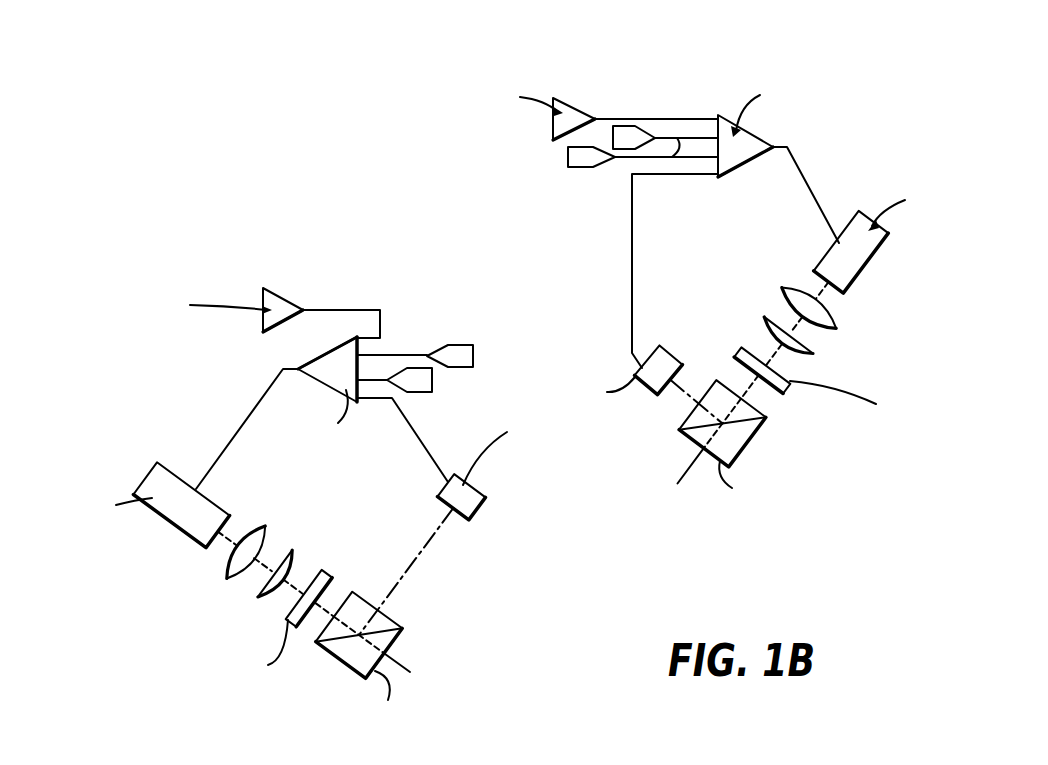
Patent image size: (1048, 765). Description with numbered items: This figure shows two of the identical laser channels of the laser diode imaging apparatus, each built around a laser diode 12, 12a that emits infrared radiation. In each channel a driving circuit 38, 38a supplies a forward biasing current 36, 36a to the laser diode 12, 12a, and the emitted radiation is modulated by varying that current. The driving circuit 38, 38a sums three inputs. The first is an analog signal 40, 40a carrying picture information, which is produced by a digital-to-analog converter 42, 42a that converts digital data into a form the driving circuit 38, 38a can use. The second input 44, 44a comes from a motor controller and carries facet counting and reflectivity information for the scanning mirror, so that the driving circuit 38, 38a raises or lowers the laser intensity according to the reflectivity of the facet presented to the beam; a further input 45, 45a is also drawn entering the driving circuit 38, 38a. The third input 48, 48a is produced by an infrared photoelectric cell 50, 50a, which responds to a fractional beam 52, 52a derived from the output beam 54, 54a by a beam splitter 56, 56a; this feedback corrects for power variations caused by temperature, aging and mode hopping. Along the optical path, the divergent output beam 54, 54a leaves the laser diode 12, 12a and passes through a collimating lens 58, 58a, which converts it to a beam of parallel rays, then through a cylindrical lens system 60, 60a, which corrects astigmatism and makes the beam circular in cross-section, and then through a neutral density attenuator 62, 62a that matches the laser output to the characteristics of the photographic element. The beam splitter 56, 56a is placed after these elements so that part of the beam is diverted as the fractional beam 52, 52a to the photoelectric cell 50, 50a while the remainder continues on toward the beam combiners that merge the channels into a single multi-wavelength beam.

The laser diode 12 is at (175, 528).
The forward biasing current 36 is at (213, 458).
The driving circuit 38 is at (344, 395).
The analog signal 40 is at (337, 310).
The digital-to-analog converter 42 is at (280, 295).
The second input 44 is at (388, 354).
The input signal 45 is at (404, 389).
The third input 48 is at (428, 445).
The infrared photoelectric cell 50 is at (478, 488).
The fractional beam 52 is at (398, 577).
The output beam 54 is at (222, 535).
The beam splitter 56 is at (342, 664).
The collimating lens 58 is at (222, 578).
The cylindrical lens system 60 is at (267, 598).
The neutral density attenuator 62 is at (345, 565).
The laser diode 12a is at (881, 262).
The forward biasing current 36a is at (810, 183).
The driving circuit 38a is at (750, 168).
The analog signal 40a is at (630, 118).
The digital-to-analog converter 42a is at (553, 125).
The second input 44a is at (624, 158).
The input signal 45a is at (640, 174).
The third input 48a is at (633, 312).
The infrared photoelectric cell 50a is at (647, 396).
The fractional beam 52a is at (678, 382).
The output beam 54a is at (826, 293).
The beam splitter 56a is at (747, 448).
The collimating lens 58a is at (835, 323).
The cylindrical lens system 60a is at (808, 352).
The neutral density attenuator 62a is at (788, 387).